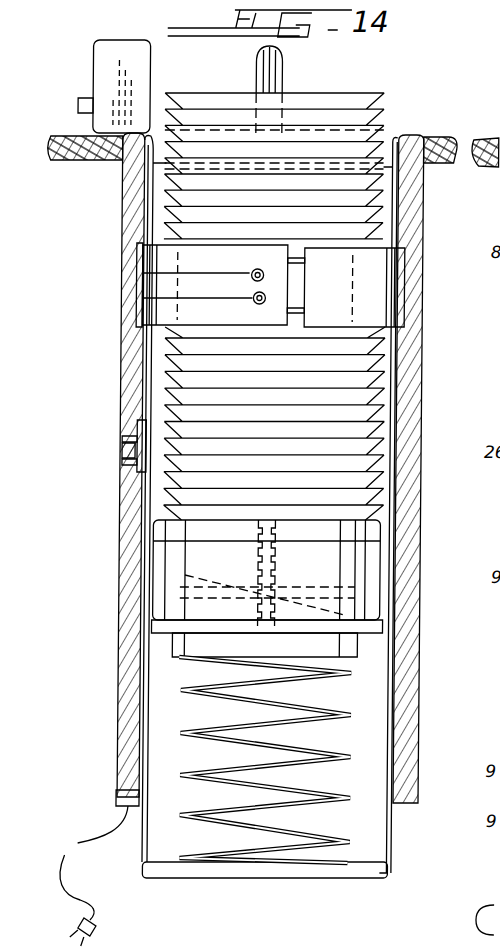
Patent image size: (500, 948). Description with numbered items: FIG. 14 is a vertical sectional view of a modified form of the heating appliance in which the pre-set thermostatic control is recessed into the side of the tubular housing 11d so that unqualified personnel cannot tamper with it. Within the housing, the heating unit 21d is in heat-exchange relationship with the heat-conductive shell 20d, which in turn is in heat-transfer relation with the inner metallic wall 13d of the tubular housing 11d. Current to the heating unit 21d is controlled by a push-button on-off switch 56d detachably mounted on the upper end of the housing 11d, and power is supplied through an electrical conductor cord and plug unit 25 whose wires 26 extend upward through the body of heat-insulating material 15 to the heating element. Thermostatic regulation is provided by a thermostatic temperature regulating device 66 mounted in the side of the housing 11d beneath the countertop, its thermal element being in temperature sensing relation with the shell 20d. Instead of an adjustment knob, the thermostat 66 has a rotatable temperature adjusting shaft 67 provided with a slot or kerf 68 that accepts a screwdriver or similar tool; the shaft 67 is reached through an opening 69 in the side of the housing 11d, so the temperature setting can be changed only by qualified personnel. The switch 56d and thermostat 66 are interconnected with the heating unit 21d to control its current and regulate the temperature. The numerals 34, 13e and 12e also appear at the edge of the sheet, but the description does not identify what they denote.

The push-button on-off switch 56d is at (93, 92).
The wires 26 is at (133, 750).
The tubular housing 11d is at (440, 214).
The inner metallic wall 13d is at (408, 683).
The heating unit 21d is at (408, 279).
The heat-conductive shell 20d is at (402, 518).
The thermostatic temperature regulating device 66 is at (144, 422).
The rotatable temperature adjusting shaft 67 is at (130, 440).
The slot or kerf 68 is at (128, 455).
The opening 69 is at (130, 466).
The electrical conductor cord and plug unit 25 is at (96, 892).
The element 34 is at (492, 397).
The heat-insulating material 15 is at (491, 724).
The element 13e is at (481, 751).
The element 12e is at (485, 848).